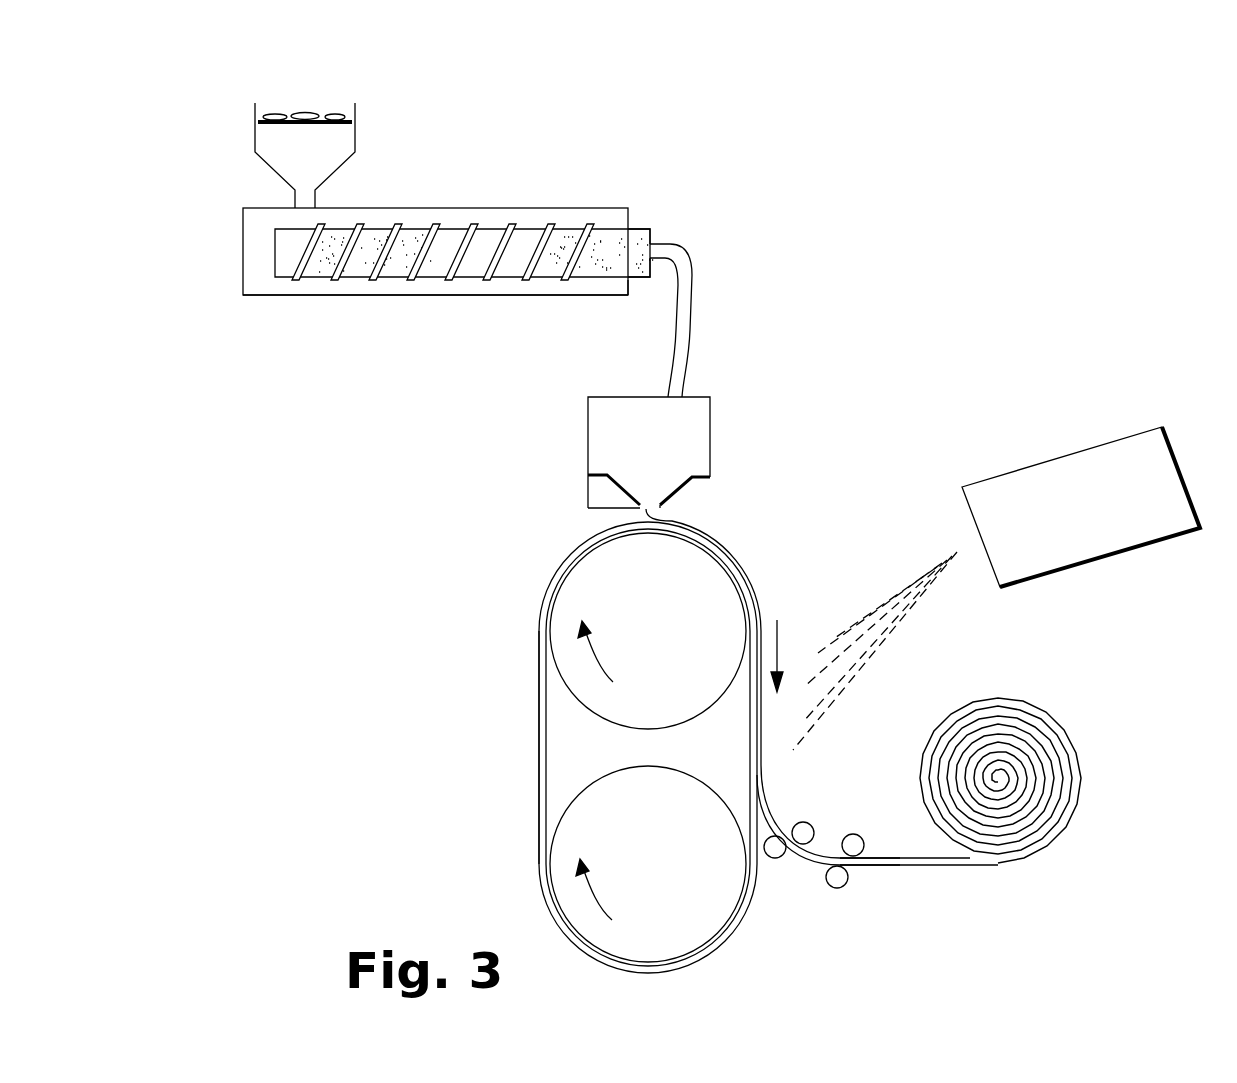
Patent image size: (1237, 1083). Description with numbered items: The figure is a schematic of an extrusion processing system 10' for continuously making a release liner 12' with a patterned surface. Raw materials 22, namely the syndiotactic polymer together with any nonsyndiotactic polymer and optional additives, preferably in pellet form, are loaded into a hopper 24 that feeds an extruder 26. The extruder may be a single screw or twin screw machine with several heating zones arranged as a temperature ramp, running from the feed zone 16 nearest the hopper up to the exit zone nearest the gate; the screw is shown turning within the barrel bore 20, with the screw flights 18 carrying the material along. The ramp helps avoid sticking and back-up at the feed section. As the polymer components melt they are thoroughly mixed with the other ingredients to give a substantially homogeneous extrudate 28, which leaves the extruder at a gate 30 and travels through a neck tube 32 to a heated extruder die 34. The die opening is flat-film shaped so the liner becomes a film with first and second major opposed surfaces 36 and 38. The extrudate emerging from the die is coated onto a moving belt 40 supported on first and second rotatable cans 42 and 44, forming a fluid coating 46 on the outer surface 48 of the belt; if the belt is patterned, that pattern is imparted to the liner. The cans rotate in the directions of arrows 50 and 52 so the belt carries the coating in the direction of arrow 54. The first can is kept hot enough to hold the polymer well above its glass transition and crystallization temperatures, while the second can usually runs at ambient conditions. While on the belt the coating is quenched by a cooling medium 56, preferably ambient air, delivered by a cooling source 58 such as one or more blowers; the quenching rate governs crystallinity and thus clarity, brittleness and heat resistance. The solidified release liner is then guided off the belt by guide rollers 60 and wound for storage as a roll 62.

The extrusion processing system 10' is at (1000, 262).
The release liner 12' is at (881, 836).
The feed zone 16 is at (391, 296).
The screw 18 is at (447, 296).
The barrel bore 20 is at (530, 296).
The raw materials 22 is at (332, 115).
The hopper 24 is at (334, 172).
The extruder 26 is at (460, 207).
The extrudate 28 is at (640, 245).
The gate 30 is at (641, 283).
The neck tube 32 is at (686, 349).
The extruder die 34 is at (708, 413).
The first major surface 36 is at (905, 857).
The second major surface 38 is at (886, 866).
The moving belt 40 is at (538, 774).
The first rotatable can 42 is at (650, 588).
The second rotatable can 44 is at (648, 817).
The fluid coating 46 is at (697, 526).
The outer surface of the moving belt 48 is at (536, 655).
The arrow indicating rotation direction of first can 50 is at (600, 666).
The arrow indicating rotation direction of second can 52 is at (600, 898).
The arrow indicating belt transport direction 54 is at (778, 640).
The cooling medium 56 is at (898, 623).
The cooling source 58 is at (1060, 474).
The guide rollers 60 is at (852, 842).
The roll 62 is at (1082, 776).